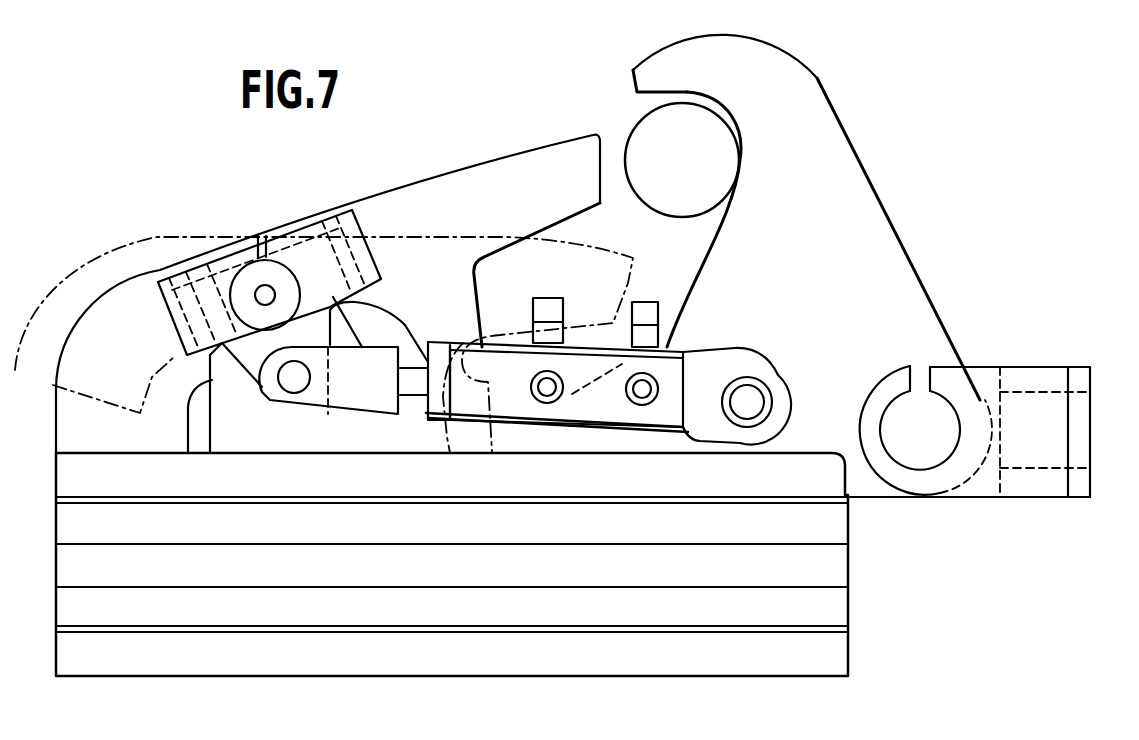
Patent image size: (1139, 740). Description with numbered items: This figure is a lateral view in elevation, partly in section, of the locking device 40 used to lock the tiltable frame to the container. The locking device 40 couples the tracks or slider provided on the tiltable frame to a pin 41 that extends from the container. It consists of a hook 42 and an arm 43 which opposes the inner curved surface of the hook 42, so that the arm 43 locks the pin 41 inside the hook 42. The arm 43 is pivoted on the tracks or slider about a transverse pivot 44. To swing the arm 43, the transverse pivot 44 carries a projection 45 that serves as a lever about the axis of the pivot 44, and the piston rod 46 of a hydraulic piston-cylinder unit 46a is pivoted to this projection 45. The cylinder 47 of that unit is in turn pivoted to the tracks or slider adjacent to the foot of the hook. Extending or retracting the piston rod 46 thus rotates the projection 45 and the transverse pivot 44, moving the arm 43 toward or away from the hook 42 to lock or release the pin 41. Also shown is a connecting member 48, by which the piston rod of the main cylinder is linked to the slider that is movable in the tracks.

The locking device 40 is at (945, 168).
The pin 41 is at (703, 128).
The hook 42 is at (870, 278).
The arm 43 is at (532, 178).
The transverse pivot 44 is at (265, 295).
The projection 45 is at (236, 368).
The piston rod 46 is at (413, 410).
The hydraulic piston-cylinder unit 46a is at (545, 435).
The cylinder 47 is at (605, 402).
The connecting member 48 is at (1037, 483).